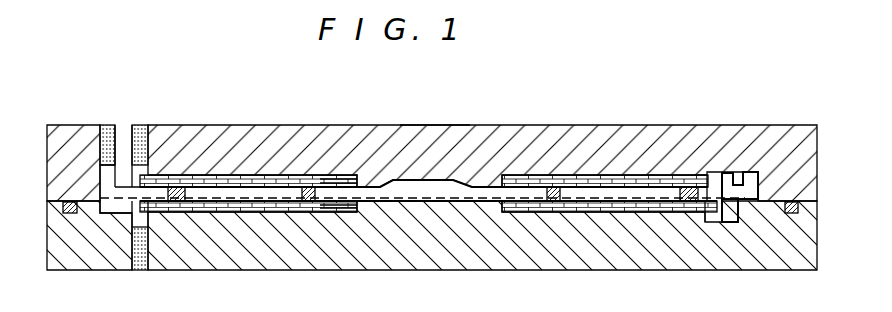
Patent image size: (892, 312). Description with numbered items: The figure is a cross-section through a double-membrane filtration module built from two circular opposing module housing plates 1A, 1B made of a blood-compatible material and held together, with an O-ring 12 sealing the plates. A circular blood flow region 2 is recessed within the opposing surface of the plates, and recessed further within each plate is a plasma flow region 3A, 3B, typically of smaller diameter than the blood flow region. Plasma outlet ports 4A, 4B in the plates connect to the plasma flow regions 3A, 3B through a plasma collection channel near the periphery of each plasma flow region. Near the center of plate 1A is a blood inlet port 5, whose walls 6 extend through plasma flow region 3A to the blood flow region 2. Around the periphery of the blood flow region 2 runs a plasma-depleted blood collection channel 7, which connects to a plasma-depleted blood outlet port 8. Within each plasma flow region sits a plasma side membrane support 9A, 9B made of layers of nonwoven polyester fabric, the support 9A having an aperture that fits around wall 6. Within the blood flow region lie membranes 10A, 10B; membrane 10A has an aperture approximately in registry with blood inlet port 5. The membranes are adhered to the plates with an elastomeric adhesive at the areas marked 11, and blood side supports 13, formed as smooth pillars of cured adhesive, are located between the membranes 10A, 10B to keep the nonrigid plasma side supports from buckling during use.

The module housing plate 1A is at (767, 143).
The module housing plate 1B is at (760, 257).
The blood flow region 2 is at (502, 192).
The plasma flow region 3A is at (578, 177).
The plasma flow region 3B is at (580, 213).
The plasma outlet port 4A is at (142, 135).
The plasma outlet port 4B is at (142, 250).
The blood inlet port 5 is at (433, 125).
The walls of blood inlet port 6 is at (398, 181).
The plasma-depleted blood collection channel 7 is at (105, 182).
The plasma-depleted blood outlet port 8 is at (107, 135).
The plasma side membrane support 9A is at (245, 180).
The plasma side membrane support 9B is at (245, 210).
The membrane 10A is at (333, 180).
The membrane 10B is at (348, 203).
The adhered areas of membranes 11 is at (125, 187).
The O-ring 12 is at (75, 213).
The blood side supports 13 is at (178, 190).